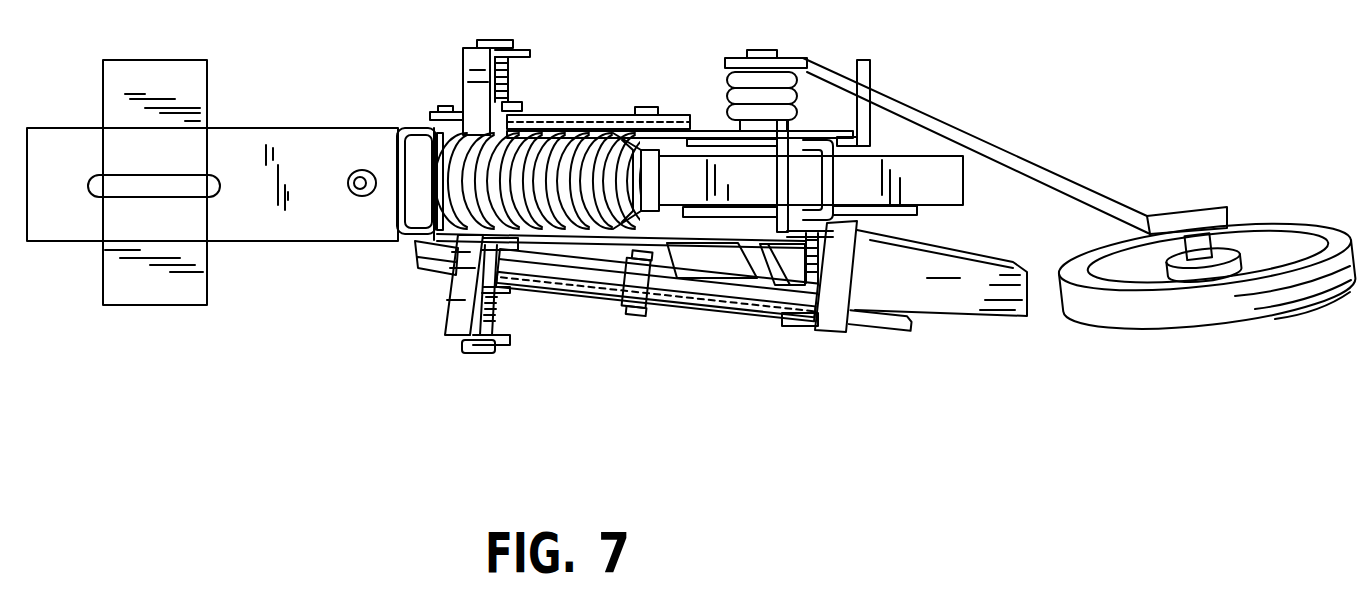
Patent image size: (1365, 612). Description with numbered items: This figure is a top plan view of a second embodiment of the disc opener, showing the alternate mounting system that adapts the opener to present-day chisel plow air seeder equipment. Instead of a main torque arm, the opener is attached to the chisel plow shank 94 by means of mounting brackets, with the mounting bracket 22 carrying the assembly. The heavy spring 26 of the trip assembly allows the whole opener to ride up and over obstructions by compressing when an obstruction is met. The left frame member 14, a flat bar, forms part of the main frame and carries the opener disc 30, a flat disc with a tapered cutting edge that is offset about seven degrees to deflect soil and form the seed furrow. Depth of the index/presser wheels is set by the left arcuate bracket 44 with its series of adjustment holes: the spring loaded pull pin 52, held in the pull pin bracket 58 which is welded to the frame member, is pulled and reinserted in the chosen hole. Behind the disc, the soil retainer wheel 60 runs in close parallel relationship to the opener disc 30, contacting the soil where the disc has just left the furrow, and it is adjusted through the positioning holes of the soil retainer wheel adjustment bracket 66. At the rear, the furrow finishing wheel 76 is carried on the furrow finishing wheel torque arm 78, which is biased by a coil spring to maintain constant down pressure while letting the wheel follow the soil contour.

The left frame member 14 is at (417, 247).
The mounting bracket 22 is at (248, 143).
The heavy spring 26 is at (553, 140).
The opener disc 30 is at (873, 236).
The left arcuate bracket 44 is at (555, 288).
The spring loaded pull pin 52 is at (460, 345).
The pull pin bracket 58 is at (470, 93).
The soil retainer wheel 60 is at (958, 297).
The soil retainer wheel adjustment bracket 66 is at (672, 302).
The furrow finishing wheel 76 is at (1248, 317).
The furrow finishing wheel torque arm 78 is at (1053, 170).
The chisel plow shank 94 is at (932, 170).